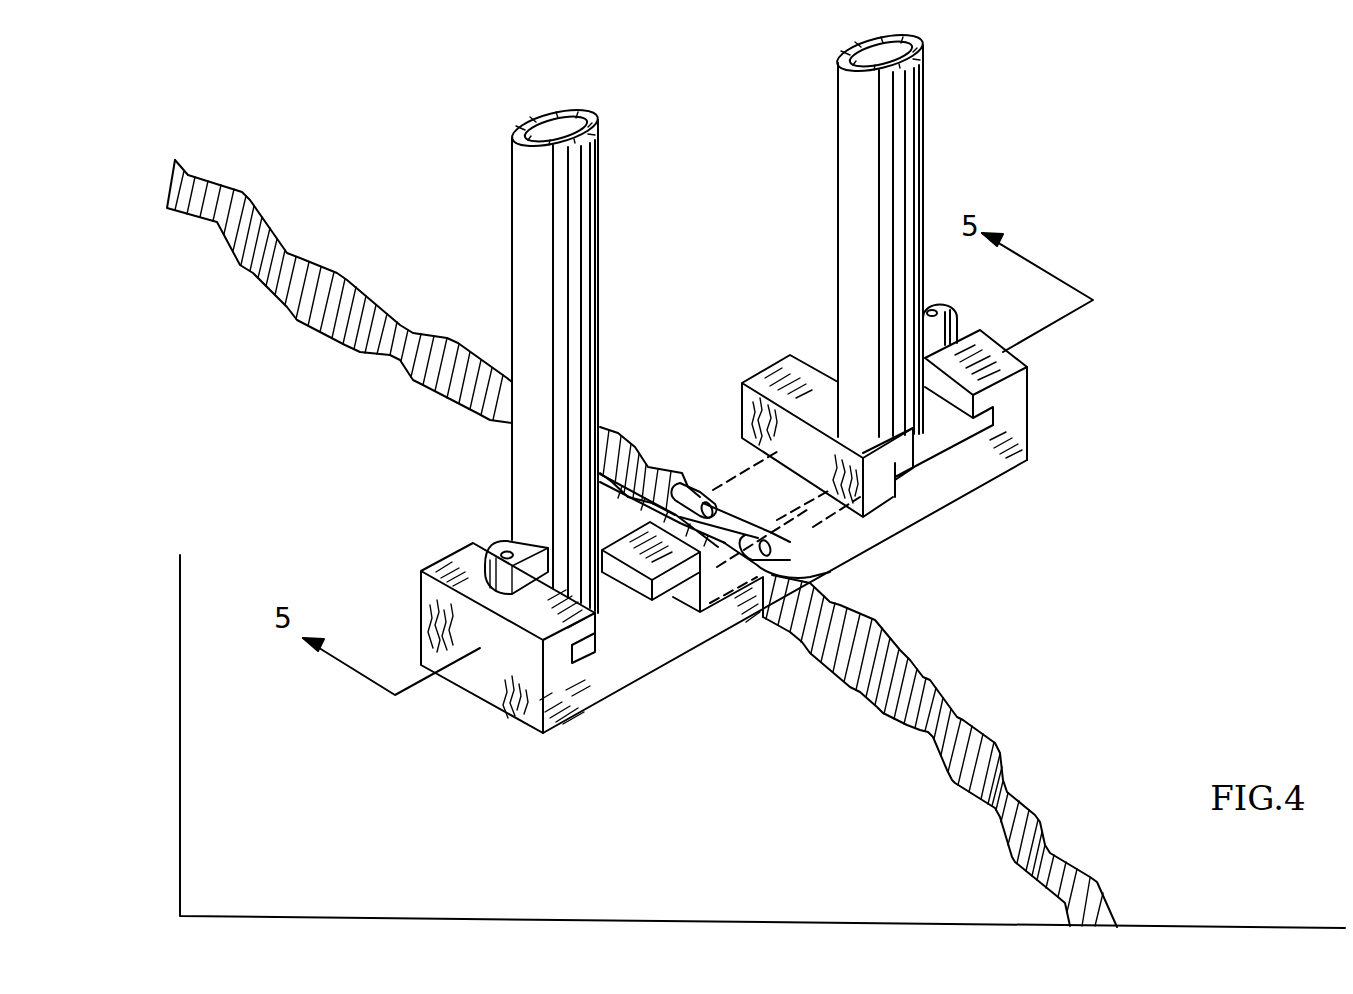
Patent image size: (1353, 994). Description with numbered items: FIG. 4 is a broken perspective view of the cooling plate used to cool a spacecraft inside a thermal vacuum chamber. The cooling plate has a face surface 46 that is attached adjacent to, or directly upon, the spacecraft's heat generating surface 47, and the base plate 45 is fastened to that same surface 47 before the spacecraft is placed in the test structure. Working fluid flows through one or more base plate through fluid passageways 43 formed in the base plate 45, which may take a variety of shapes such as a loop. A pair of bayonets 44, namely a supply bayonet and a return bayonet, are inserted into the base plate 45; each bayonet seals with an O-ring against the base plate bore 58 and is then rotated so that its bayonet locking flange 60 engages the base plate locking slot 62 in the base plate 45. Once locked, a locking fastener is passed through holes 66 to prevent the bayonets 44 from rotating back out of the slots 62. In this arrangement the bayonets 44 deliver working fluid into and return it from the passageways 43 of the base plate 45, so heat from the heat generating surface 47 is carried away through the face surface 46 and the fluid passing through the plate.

The base plate through fluid passageway 43 is at (695, 507).
The bayonet 44 is at (598, 267).
The base plate 45 is at (907, 503).
The face surface 46 is at (875, 547).
The heat generating surface 47 is at (1103, 592).
The base plate bore 58 is at (570, 595).
The bayonet locking flange 60 is at (470, 565).
The base plate locking slot 62 is at (673, 595).
The hole 66 is at (508, 547).